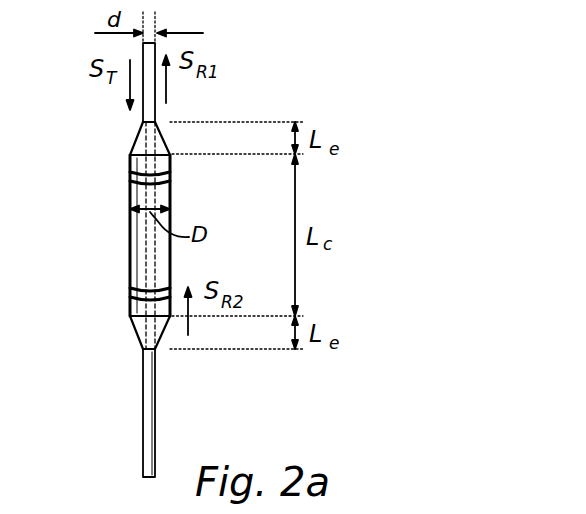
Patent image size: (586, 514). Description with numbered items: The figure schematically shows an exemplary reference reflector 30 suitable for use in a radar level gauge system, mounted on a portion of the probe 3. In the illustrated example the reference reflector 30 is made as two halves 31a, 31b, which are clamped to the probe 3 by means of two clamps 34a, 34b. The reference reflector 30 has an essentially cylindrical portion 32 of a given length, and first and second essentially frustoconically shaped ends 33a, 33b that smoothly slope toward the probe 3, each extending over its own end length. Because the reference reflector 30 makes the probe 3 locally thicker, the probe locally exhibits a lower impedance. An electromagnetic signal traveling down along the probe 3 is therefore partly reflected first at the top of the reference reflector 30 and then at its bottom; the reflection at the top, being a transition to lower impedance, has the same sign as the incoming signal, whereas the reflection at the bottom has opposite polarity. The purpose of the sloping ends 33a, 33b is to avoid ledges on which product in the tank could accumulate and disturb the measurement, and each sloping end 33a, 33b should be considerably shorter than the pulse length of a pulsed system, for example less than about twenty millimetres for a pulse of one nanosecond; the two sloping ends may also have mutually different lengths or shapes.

The probe 3 is at (157, 400).
The reference reflector 30 is at (220, 182).
The first half of reference reflector 31a is at (135, 328).
The second half of reference reflector 31b is at (168, 312).
The cylindrical portion 32 is at (116, 155).
The first frustoconically shaped end 33a is at (116, 123).
The second frustoconically shaped end 33b is at (116, 317).
The first clamp 34a is at (172, 176).
The second clamp 34b is at (172, 292).